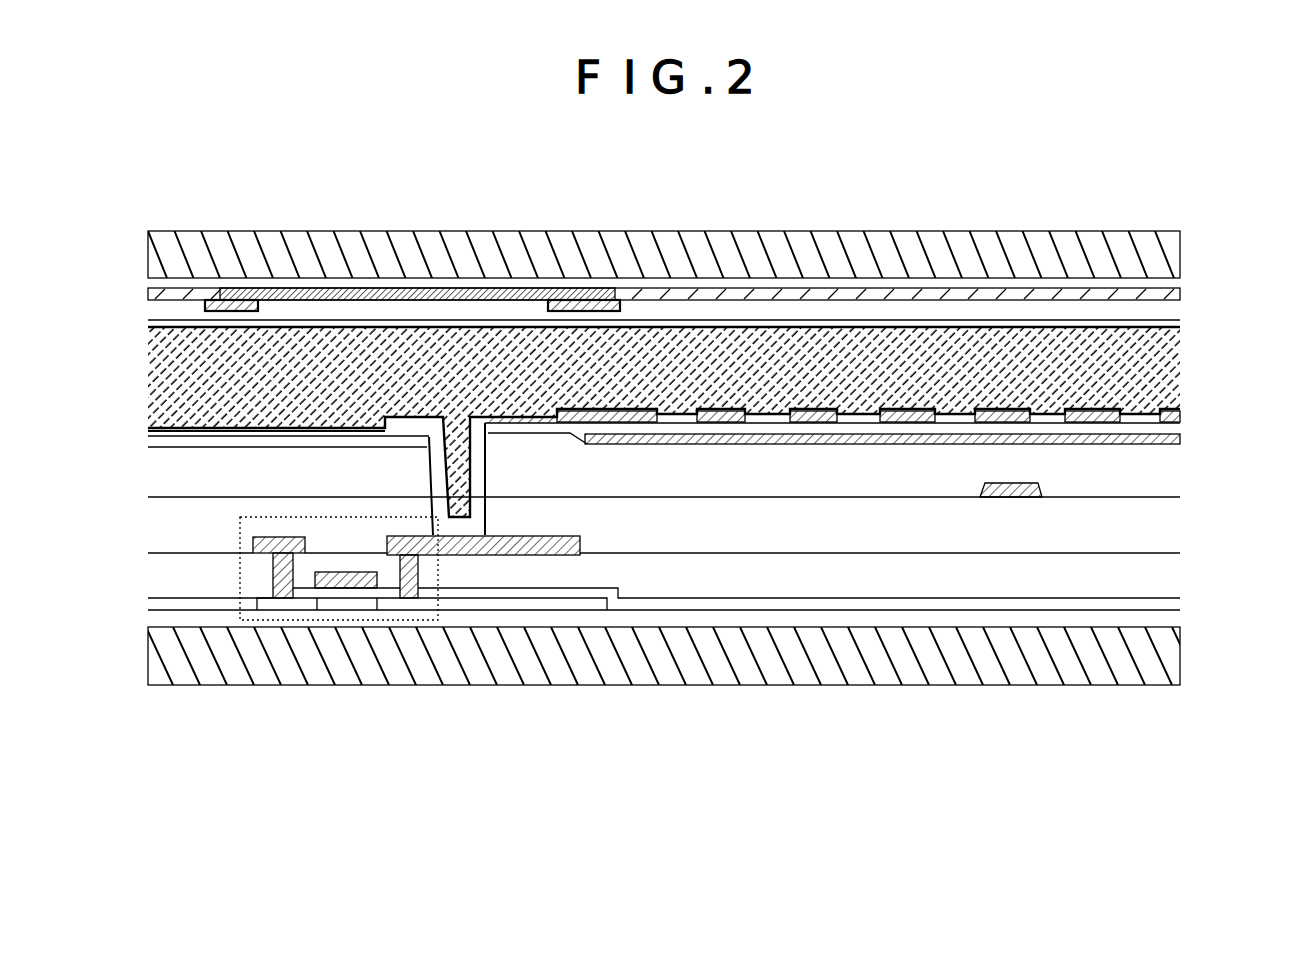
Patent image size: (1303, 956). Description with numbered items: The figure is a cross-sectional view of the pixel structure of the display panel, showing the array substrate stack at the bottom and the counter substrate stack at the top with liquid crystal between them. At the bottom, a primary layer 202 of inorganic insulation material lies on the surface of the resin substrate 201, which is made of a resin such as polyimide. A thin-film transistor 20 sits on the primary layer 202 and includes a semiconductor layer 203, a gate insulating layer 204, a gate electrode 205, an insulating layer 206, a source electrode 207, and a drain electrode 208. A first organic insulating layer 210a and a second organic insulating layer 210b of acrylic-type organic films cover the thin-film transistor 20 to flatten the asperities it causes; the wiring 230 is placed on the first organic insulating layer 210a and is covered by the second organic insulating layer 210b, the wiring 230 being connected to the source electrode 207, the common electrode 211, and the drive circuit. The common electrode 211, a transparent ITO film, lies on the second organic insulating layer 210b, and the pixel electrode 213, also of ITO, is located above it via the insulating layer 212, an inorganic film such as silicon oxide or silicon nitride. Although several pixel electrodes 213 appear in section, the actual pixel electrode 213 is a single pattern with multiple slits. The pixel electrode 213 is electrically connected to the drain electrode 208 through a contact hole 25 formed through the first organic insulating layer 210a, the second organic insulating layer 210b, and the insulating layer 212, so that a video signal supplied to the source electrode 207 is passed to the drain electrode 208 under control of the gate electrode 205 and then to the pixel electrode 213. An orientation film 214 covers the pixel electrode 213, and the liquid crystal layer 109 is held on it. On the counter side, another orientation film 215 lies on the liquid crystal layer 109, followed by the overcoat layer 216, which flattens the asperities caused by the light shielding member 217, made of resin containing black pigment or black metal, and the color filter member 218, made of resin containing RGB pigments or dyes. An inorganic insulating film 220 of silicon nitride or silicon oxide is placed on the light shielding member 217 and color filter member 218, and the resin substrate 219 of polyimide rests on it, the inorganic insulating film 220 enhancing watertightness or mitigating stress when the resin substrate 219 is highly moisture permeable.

The thin-film transistor 20 is at (243, 536).
The contact hole 25 is at (443, 491).
The liquid crystal layer 109 is at (1182, 367).
The resin substrate 201 is at (258, 688).
The primary layer 202 is at (152, 620).
The semiconductor layer 203 is at (400, 612).
The gate insulating layer 204 is at (700, 598).
The gate electrode 205 is at (343, 572).
The insulating layer 206 is at (855, 561).
The source electrode 207 is at (272, 576).
The drain electrode 208 is at (530, 558).
The first organic insulating layer 210a is at (1172, 523).
The second organic insulating layer 210b is at (1172, 476).
The common electrode 211 is at (812, 444).
The insulating layer 212 is at (302, 447).
The pixel electrode 213 is at (482, 464).
The orientation film 214 is at (147, 428).
The orientation film 215 is at (1182, 331).
The overcoat layer 216 is at (1182, 308).
The light shielding member 217 is at (361, 291).
The color filter member 218 is at (1181, 296).
The resin substrate 219 is at (1092, 243).
The inorganic insulating film 220 is at (860, 282).
The wiring 230 is at (1042, 487).